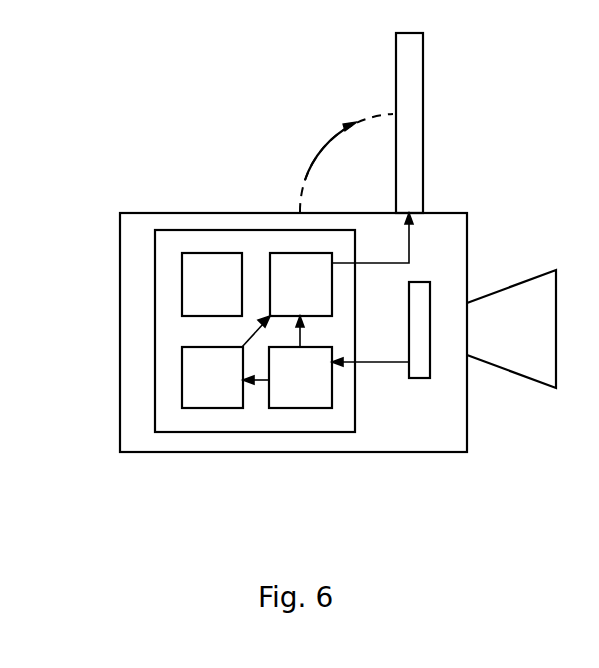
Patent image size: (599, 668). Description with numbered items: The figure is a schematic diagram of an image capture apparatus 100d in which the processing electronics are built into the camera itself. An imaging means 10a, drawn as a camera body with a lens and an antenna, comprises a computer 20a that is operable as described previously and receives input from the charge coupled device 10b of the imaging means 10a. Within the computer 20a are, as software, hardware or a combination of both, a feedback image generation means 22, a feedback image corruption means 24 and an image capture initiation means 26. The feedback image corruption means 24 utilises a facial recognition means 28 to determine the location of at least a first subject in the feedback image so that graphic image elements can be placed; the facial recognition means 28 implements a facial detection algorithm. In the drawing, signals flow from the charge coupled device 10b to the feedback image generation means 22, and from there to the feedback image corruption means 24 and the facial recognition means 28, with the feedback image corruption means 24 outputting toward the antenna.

The image capture apparatus 100d is at (299, 284).
The imaging means 10a is at (421, 452).
The charge coupled device 10b is at (421, 378).
The computer 20a is at (154, 331).
The feedback image generation means 22 is at (316, 389).
The feedback image corruption means 24 is at (316, 297).
The image capture initiation means 26 is at (228, 297).
The facial recognition means 28 is at (228, 389).